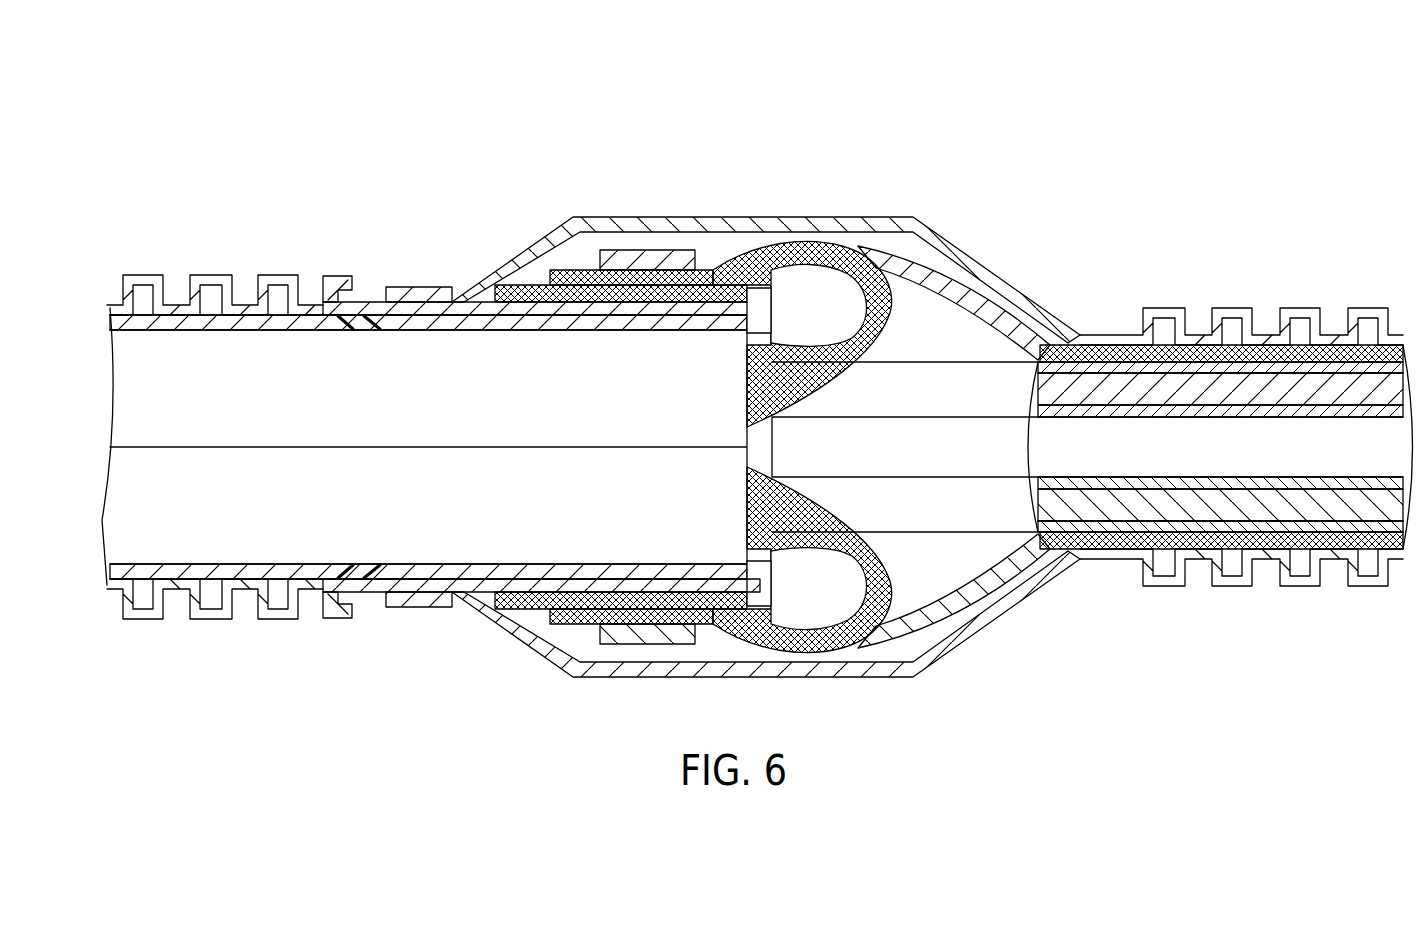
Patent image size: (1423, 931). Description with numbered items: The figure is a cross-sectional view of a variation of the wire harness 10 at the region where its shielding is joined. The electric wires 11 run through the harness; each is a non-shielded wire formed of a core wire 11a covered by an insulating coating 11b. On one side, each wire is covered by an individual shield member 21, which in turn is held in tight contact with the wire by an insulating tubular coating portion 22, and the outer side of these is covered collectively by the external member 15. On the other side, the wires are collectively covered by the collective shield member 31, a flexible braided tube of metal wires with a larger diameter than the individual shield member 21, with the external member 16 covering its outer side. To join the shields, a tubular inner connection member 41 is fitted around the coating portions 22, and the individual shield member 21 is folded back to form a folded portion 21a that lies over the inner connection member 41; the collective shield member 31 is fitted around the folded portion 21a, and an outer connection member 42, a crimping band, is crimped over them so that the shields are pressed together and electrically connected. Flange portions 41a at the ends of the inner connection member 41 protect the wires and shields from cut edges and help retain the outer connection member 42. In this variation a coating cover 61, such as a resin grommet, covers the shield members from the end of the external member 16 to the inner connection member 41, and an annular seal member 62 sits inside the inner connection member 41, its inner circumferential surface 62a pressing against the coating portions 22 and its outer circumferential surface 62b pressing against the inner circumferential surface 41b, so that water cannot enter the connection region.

The wire harness 10 is at (1285, 147).
The electric wire 11 is at (1003, 487).
The core wire 11a is at (1150, 398).
The insulating coating 11b is at (1246, 404).
The external member 15 is at (145, 274).
The external member 16 is at (1306, 307).
The individual shield member 21 is at (795, 405).
The folded portion 21a is at (638, 302).
The coating portion 22 is at (127, 417).
The collective shield member 31 is at (990, 306).
The inner connection member 41 is at (517, 314).
The flange portion 41a is at (338, 276).
The inner circumferential surface 41b is at (427, 317).
The outer connection member 42 is at (626, 249).
The coating cover 61 is at (598, 221).
The seal member 62 is at (372, 565).
The inner circumferential surface 62a is at (338, 565).
The outer circumferential surface 62b is at (380, 607).